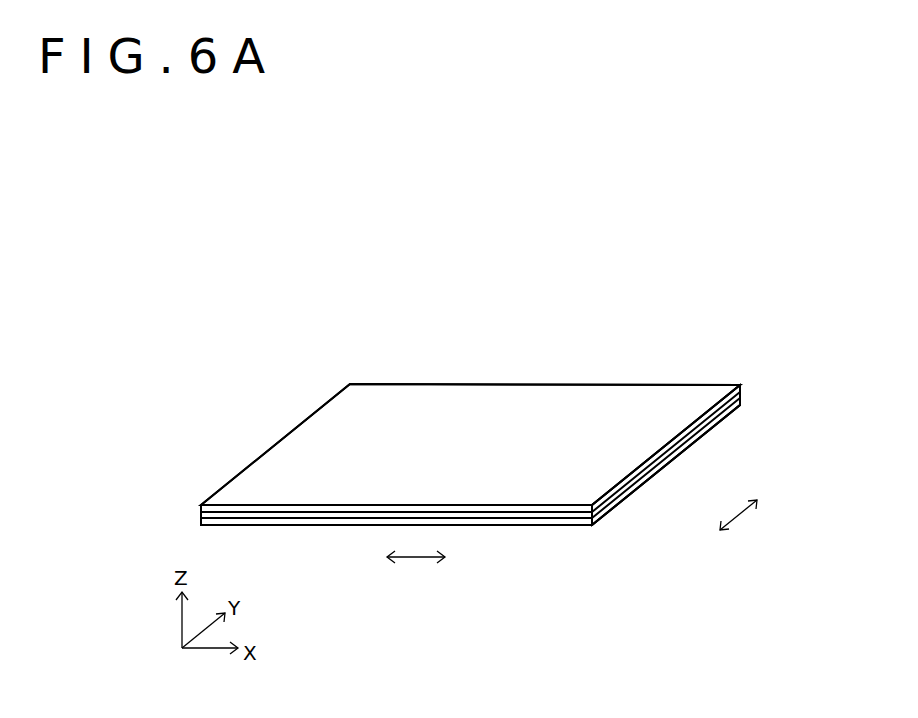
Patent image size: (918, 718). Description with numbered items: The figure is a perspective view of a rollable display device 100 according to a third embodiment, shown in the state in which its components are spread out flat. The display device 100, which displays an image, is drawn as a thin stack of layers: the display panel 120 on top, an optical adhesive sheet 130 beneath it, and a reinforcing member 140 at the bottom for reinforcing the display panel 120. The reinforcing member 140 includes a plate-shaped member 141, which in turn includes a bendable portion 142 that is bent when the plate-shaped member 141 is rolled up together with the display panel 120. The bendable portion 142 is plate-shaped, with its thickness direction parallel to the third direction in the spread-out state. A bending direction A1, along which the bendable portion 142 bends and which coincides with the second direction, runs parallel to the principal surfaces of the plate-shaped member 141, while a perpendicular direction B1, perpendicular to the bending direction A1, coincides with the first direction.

The display device 100 is at (330, 354).
The display panel 120 is at (488, 405).
The optical adhesive sheet 130 is at (495, 515).
The plate-shaped member 141 is at (543, 527).
The reinforcing member 140 is at (592, 531).
The bendable portion 142 is at (672, 457).
The perpendicular direction B1 is at (416, 558).
The bending direction A1 is at (742, 518).